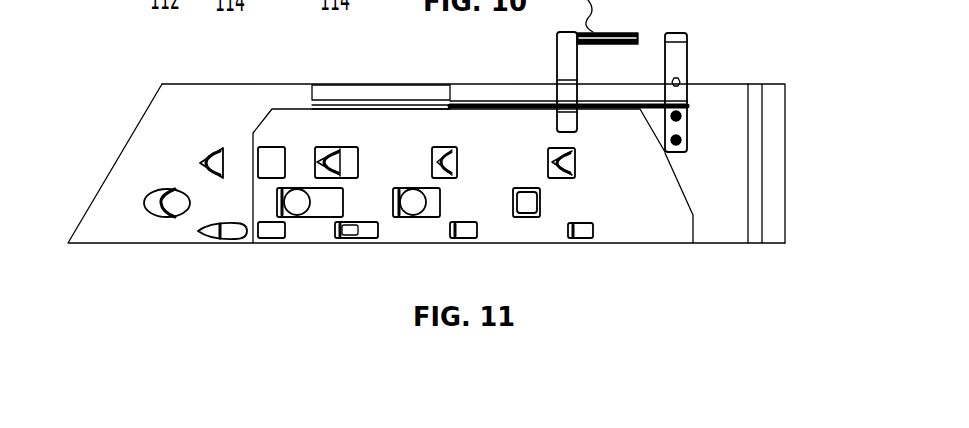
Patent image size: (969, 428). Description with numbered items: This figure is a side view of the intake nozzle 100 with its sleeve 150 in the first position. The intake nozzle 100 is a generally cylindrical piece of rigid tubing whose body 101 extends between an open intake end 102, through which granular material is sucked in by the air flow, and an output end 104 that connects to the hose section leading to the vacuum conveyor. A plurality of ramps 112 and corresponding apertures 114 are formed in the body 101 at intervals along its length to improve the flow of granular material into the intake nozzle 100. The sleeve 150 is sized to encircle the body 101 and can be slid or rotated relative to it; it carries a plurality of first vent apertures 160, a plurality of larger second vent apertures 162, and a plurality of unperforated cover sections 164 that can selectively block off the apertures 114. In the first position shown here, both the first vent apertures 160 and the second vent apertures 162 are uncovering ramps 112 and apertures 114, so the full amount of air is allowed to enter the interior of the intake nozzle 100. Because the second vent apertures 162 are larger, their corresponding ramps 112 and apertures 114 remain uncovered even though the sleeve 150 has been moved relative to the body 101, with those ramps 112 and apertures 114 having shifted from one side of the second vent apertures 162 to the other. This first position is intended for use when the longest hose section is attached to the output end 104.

The intake nozzle 100 is at (797, 45).
The body 101 is at (230, 100).
The intake end 102 is at (112, 167).
The output end 104 is at (784, 167).
The ramp 112 is at (154, 217).
The aperture 114 is at (177, 205).
The sleeve 150 is at (663, 222).
The first vent aperture 160 is at (453, 145).
The second vent aperture 162 is at (312, 192).
The unperforated cover section 164 is at (358, 197).